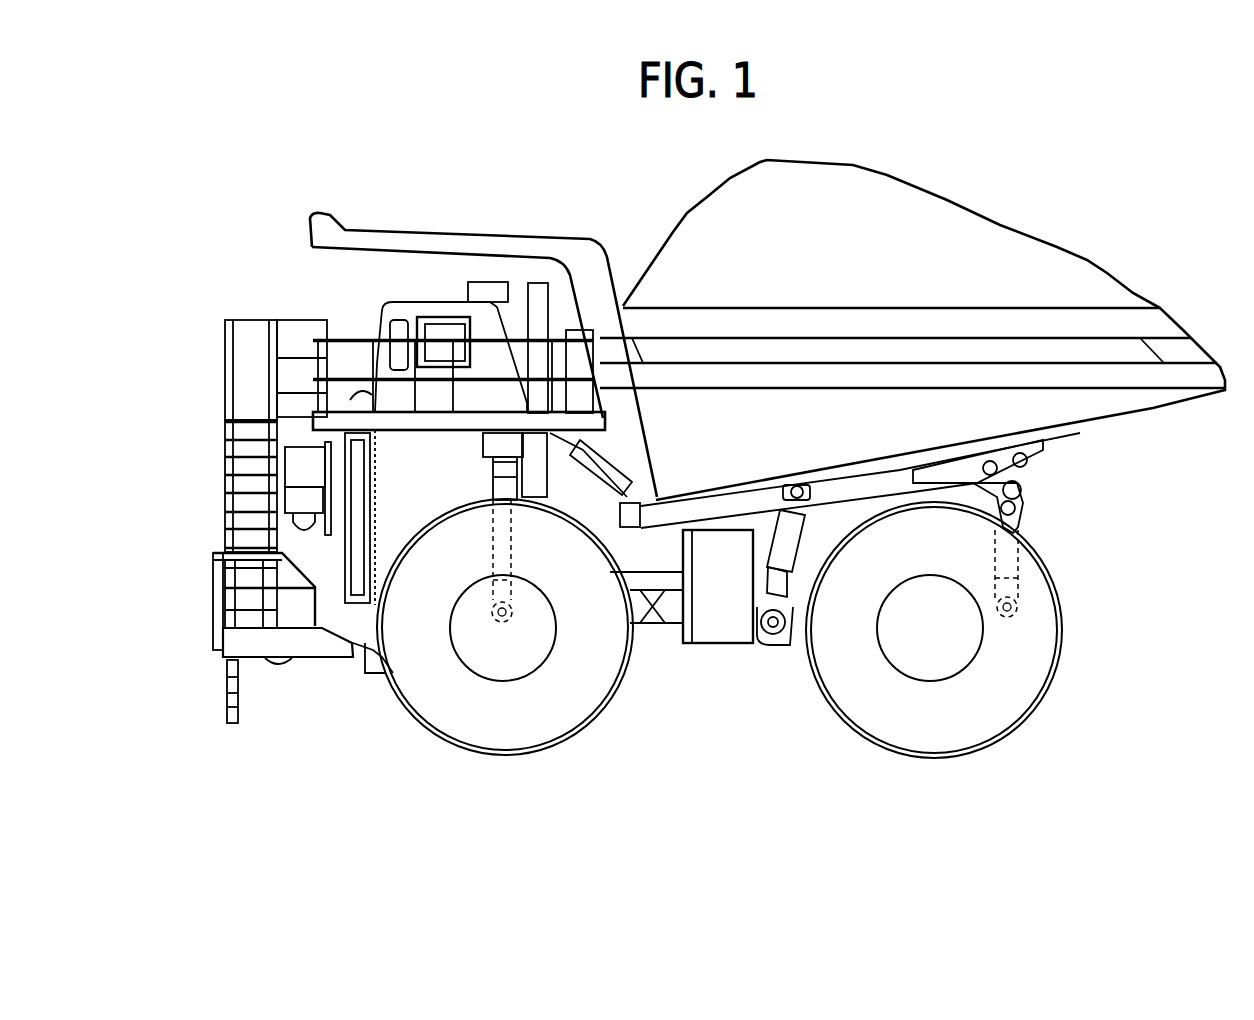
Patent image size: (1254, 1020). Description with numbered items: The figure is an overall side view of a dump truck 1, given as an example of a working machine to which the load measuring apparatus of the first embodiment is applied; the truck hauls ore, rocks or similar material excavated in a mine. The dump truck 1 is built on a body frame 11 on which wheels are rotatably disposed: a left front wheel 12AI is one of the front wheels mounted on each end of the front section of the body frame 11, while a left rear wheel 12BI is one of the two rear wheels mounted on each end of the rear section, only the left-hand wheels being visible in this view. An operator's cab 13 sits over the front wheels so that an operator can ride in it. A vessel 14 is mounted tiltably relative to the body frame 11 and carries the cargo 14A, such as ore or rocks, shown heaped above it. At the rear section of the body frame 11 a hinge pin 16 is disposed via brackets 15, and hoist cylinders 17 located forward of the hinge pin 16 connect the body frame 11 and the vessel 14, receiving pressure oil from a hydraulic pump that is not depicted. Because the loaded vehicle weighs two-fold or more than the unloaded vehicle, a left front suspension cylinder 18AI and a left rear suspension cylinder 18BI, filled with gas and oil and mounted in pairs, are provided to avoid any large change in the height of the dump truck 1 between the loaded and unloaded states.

The dump truck 1 is at (1181, 138).
The body frame 11 is at (646, 529).
The left front wheel 12AI is at (388, 813).
The left rear wheel 12BI is at (1133, 810).
The operator's cab 13 is at (459, 303).
The vessel 14 is at (773, 356).
The cargo 14A is at (891, 218).
The brackets 15 is at (1051, 458).
The hinge pin 16 is at (1062, 500).
The hoist cylinders 17 is at (784, 615).
The left front suspension cylinder 18AI is at (408, 605).
The left rear suspension cylinder 18BI is at (1081, 573).